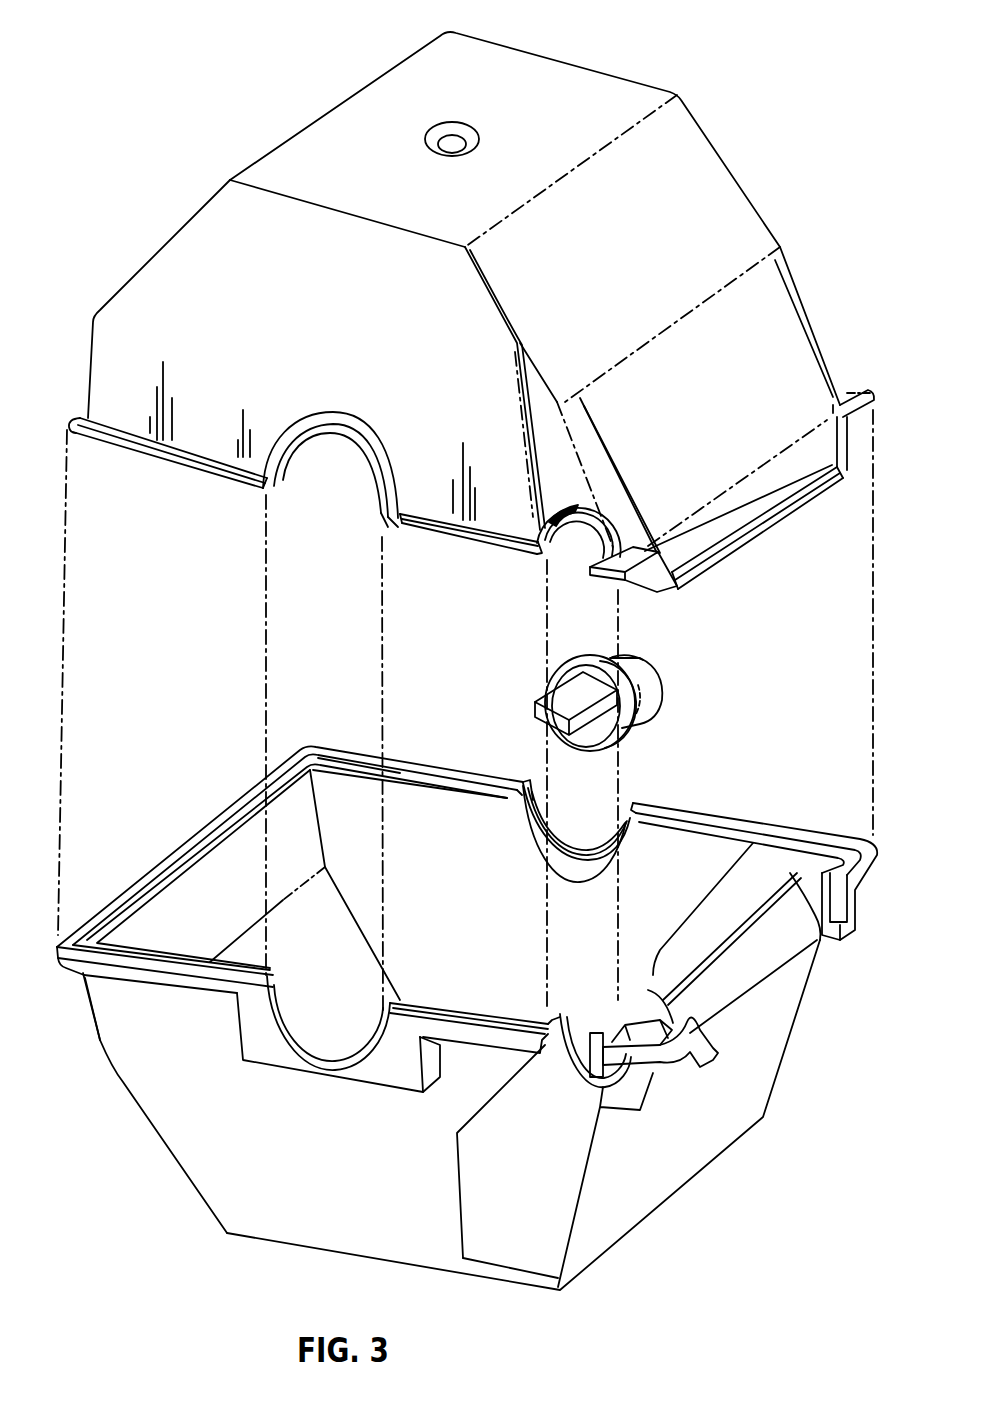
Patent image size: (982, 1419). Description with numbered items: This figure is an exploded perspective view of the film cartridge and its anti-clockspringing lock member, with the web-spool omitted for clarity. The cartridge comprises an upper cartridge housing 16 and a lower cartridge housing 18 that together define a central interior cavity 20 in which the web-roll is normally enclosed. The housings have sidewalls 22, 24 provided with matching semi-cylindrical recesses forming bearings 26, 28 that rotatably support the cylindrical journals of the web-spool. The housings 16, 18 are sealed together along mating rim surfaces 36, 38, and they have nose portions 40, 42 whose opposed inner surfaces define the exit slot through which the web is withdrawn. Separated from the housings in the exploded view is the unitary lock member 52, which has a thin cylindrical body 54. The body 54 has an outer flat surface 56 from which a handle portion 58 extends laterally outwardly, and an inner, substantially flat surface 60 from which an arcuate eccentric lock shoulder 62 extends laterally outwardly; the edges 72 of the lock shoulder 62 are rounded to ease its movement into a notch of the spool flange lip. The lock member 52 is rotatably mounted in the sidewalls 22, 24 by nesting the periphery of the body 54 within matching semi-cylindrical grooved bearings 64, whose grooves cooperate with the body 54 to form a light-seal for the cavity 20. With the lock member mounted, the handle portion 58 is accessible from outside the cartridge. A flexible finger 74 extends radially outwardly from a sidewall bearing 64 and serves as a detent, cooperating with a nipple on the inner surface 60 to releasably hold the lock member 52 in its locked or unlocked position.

The upper cartridge housing 16 is at (200, 140).
The lower cartridge housing 18 is at (303, 1170).
The central interior cavity 20 is at (203, 877).
The sidewall 22 is at (134, 288).
The sidewall 24 is at (400, 793).
The bearing 26 is at (283, 469).
The bearing 28 is at (518, 828).
The rim surface 36 is at (439, 535).
The rim surface 38 is at (167, 978).
The nose portion 40 is at (763, 527).
The nose portion 42 is at (773, 967).
The lock member 52 is at (697, 676).
The cylindrical body 54 is at (637, 727).
The outer flat surface 56 is at (620, 750).
The handle portion 58 is at (538, 718).
The inner flat surface 60 is at (582, 657).
The eccentric lock shoulder 62 is at (652, 697).
The grooved bearing 64 is at (570, 537).
The edges of the lock shoulder 72 is at (623, 652).
The flexible finger 74 is at (600, 1058).